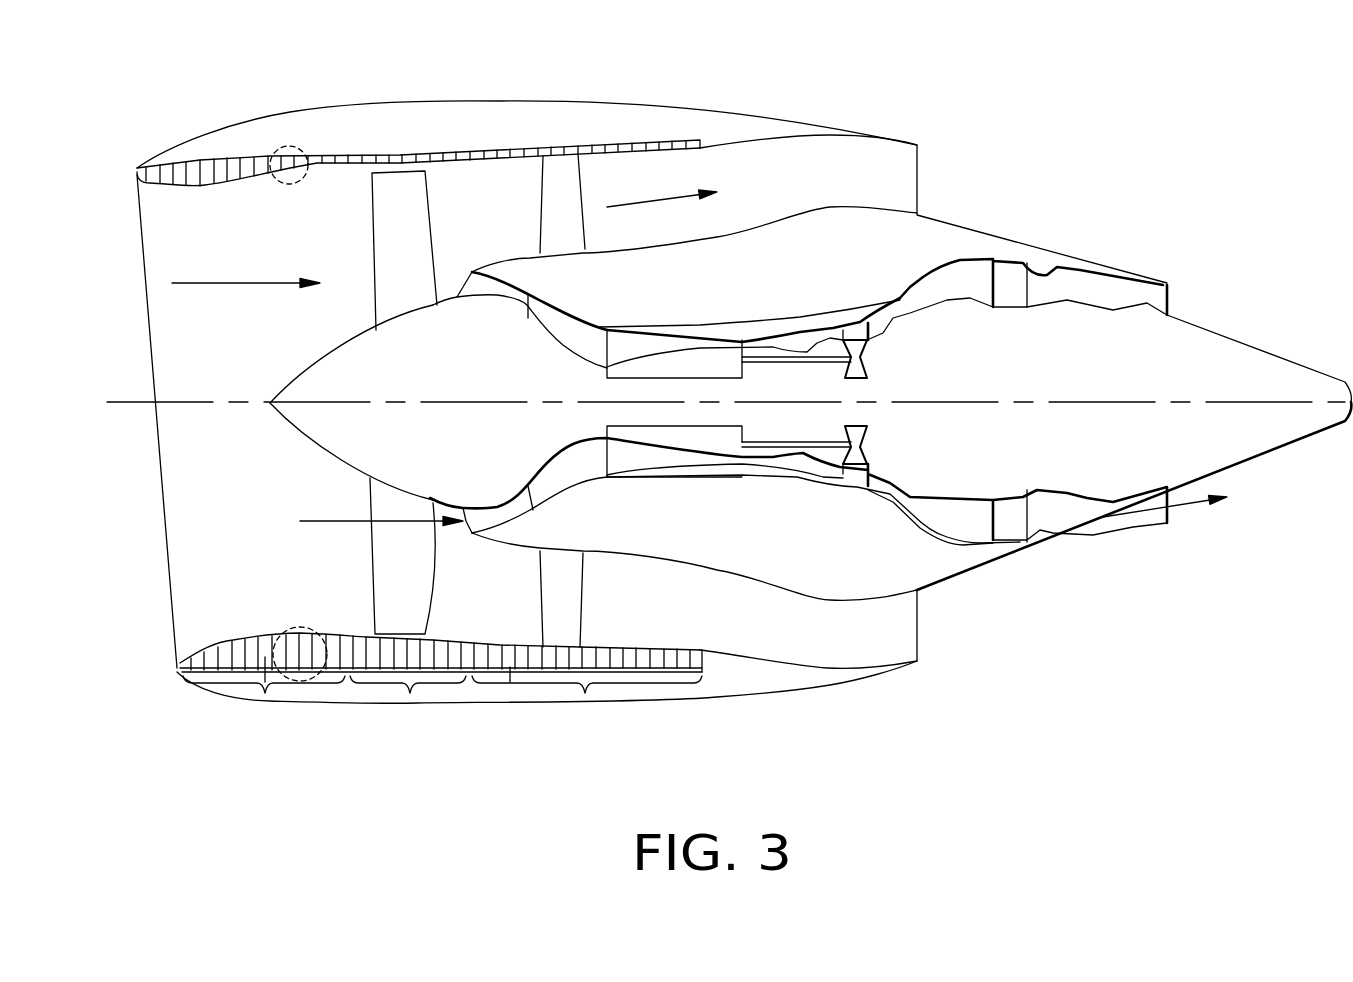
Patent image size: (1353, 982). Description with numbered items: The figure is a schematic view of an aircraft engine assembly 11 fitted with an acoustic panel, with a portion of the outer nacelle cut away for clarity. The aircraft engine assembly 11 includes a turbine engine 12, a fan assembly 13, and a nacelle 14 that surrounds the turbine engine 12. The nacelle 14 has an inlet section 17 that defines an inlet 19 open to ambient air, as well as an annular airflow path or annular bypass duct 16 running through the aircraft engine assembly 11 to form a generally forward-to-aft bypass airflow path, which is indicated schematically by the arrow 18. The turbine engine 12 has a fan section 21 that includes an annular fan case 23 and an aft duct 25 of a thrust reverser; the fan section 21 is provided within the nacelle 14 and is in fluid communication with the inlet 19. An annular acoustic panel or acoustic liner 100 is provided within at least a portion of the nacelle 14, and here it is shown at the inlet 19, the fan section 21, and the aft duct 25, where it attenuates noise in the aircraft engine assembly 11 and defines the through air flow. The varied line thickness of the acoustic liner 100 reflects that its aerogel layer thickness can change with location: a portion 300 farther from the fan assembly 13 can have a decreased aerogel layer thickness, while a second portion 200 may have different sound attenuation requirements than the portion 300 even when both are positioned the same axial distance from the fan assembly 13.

The aircraft engine assembly 11 is at (218, 103).
The nacelle 14 is at (266, 112).
The annular bypass duct 16 is at (467, 181).
The arrow 18 is at (640, 200).
The turbine engine 12 is at (563, 275).
The fan assembly 13 is at (398, 245).
The acoustic liner 100 is at (323, 150).
The second portion 200 is at (282, 182).
The portion 300 is at (277, 630).
The inlet 19 is at (224, 540).
The inlet section 17 is at (272, 698).
The annular fan case 23 is at (408, 697).
The fan section 21 is at (473, 694).
The aft duct 25 is at (587, 693).